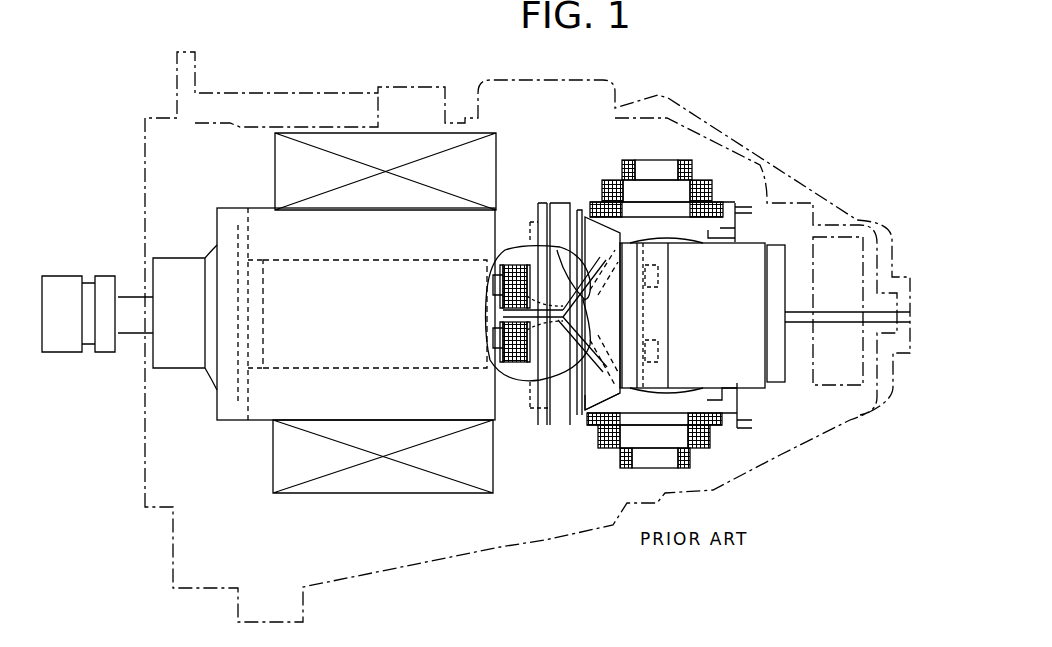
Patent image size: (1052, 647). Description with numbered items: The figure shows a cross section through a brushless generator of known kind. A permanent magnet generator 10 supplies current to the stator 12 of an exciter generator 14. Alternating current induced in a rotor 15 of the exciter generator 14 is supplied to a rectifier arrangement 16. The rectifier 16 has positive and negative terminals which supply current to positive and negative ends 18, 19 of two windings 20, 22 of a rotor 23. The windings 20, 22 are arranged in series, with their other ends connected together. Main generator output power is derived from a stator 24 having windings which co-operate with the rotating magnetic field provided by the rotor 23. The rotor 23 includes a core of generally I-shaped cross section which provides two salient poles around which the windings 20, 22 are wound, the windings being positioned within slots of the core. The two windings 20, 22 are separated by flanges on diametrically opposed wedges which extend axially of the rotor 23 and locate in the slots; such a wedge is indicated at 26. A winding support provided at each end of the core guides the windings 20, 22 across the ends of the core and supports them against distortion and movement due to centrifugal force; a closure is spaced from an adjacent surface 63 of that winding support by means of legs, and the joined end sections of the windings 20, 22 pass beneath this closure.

The permanent magnet generator 10 is at (842, 245).
The stator 12 is at (647, 458).
The exciter generator 14 is at (657, 164).
The rotor 15 is at (653, 402).
The rectifier arrangement 16 is at (655, 262).
The positive end 18 is at (558, 225).
The negative end 19 is at (565, 333).
The winding 20 is at (515, 248).
The winding 22 is at (503, 332).
The rotor 23 is at (343, 258).
The stator 24 is at (330, 140).
The wedge 26 is at (367, 352).
The adjacent surface 63 is at (548, 360).